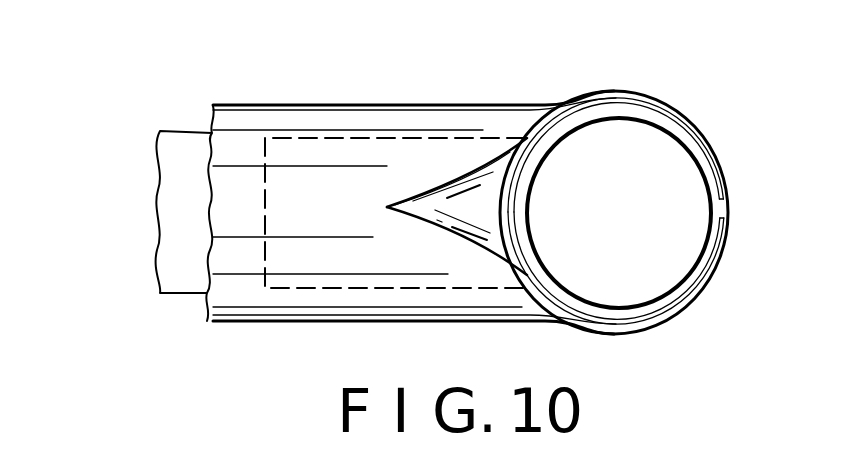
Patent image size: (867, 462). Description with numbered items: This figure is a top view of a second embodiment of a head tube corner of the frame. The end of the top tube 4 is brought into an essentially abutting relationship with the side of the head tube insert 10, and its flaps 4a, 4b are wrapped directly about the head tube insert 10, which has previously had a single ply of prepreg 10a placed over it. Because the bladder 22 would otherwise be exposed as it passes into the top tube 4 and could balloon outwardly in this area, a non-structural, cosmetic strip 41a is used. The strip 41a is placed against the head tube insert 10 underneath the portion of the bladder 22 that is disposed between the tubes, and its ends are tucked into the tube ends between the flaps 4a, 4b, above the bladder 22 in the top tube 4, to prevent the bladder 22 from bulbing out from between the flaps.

The top tube 4 is at (262, 91).
The flap 4a is at (703, 275).
The flap 4b is at (717, 160).
The head tube insert 10 is at (707, 210).
The single ply of prepreg 10a is at (724, 204).
The bladder 22 is at (177, 217).
The strip 41a is at (457, 193).